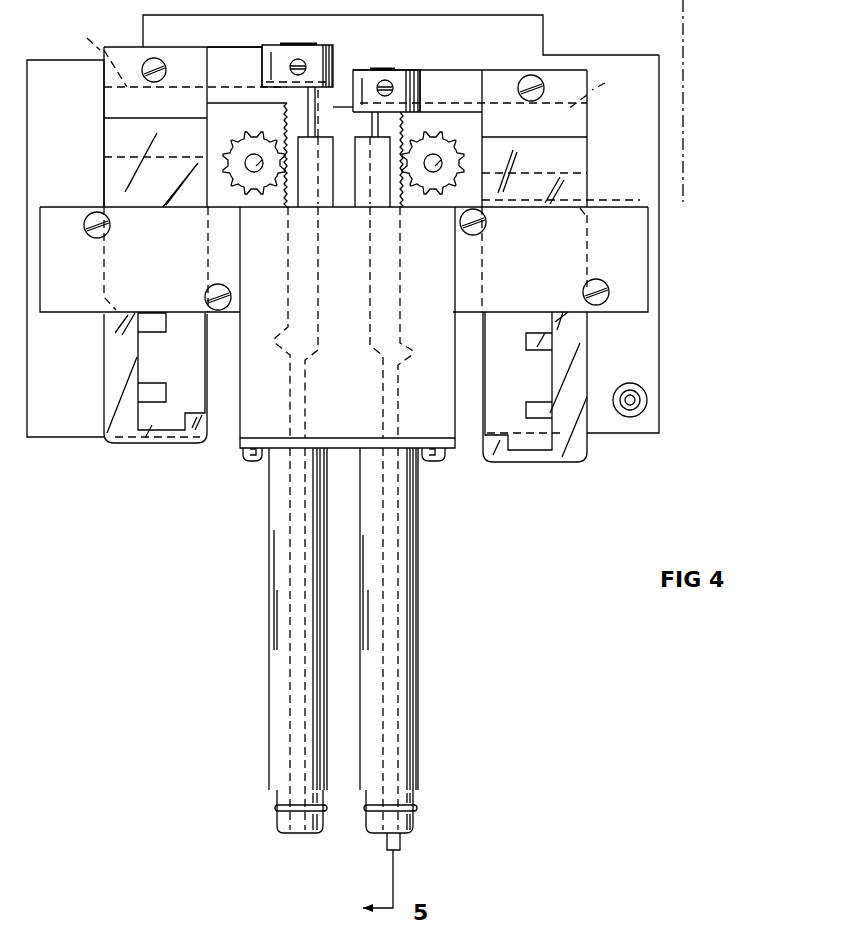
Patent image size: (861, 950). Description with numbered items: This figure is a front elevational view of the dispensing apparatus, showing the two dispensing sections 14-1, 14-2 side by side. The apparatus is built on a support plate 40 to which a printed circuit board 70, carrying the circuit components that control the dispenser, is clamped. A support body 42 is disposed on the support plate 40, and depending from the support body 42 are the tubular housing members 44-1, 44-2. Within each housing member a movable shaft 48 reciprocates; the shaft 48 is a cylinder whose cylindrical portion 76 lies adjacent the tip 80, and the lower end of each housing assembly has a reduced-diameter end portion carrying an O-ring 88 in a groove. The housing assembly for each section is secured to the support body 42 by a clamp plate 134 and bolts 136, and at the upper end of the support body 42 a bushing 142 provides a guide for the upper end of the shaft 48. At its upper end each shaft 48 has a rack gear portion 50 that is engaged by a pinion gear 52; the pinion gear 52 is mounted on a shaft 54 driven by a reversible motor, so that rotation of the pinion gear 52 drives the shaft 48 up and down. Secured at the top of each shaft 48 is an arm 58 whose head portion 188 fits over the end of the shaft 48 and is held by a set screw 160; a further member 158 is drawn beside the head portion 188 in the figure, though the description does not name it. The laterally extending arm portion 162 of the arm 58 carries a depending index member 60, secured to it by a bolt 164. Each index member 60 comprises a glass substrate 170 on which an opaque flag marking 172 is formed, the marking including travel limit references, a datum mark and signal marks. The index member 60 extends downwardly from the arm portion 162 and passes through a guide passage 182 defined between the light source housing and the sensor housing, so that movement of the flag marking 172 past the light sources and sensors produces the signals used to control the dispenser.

The support plate 40 is at (342, 107).
The printed circuit board 70 is at (45, 59).
The index member 60 is at (104, 138).
The bolt 164 is at (158, 62).
The arm 58 is at (232, 45).
The clamp block 158 is at (320, 45).
The set screw 160 is at (292, 60).
The arm portion 162 is at (354, 65).
The glass substrate 170 is at (113, 183).
The guide passage 182 is at (108, 318).
The rack gear portion 50 is at (286, 118).
The pinion gear 52 is at (246, 133).
The shaft 54 is at (257, 170).
The bushing 142 is at (356, 207).
The shaft 48 is at (288, 372).
The support body 42 is at (257, 420).
The flag marking 172 is at (148, 348).
The head portion 188 is at (647, 400).
The clamp plate 134 is at (452, 444).
The bolts 136 is at (253, 460).
The dispensing section 14-1 is at (235, 658).
The dispensing section 14-2 is at (438, 662).
The tubular housing member 44-1 is at (270, 730).
The tubular housing member 44-2 is at (420, 732).
The O-ring 88 is at (276, 808).
The cylindrical portion 76 is at (288, 823).
The tip 80 is at (390, 848).